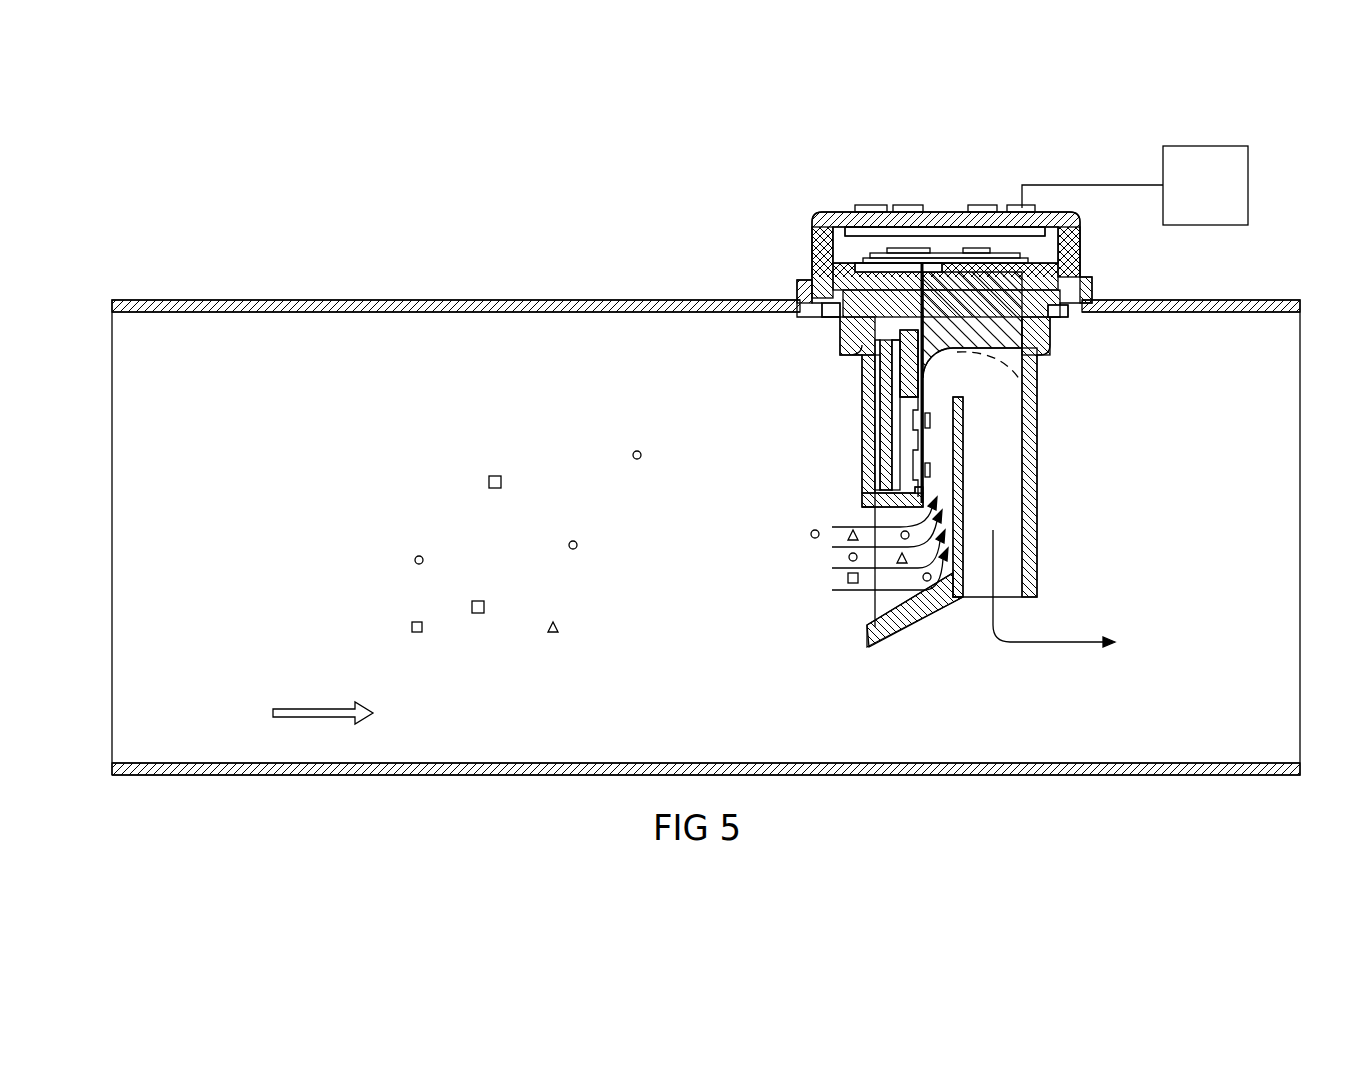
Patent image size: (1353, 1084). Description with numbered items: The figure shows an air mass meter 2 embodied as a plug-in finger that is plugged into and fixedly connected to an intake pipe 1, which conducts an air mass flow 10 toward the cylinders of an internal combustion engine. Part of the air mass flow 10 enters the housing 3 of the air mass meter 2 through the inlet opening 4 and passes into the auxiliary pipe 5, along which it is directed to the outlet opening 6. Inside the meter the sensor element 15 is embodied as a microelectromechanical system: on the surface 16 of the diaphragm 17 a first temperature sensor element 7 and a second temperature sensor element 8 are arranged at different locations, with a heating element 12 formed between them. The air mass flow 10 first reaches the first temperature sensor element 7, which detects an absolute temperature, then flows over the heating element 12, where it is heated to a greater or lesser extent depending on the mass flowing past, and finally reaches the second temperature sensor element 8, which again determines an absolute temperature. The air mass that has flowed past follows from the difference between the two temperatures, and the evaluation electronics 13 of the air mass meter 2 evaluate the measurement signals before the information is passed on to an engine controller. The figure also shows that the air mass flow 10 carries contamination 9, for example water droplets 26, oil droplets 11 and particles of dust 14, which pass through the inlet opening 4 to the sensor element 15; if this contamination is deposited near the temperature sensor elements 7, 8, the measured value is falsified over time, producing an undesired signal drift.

The intake pipe 1 is at (413, 300).
The air mass meter 2 is at (1092, 252).
The housing 3 is at (1092, 297).
The inlet opening 4 is at (822, 560).
The auxiliary pipe 5 is at (1028, 562).
The outlet opening 6 is at (978, 615).
The first temperature sensor element 7 is at (925, 478).
The second temperature sensor element 8 is at (930, 420).
The contamination 9 is at (443, 493).
The air mass flow 10 is at (298, 712).
The oil droplets 11 is at (641, 452).
The heating element 12 is at (920, 440).
The evaluation electronics 13 is at (925, 250).
The particles of dust 14 is at (412, 627).
The sensor element 15 is at (941, 393).
The surface 16 is at (930, 468).
The diaphragm 17 is at (920, 426).
The water droplets 26 is at (555, 640).